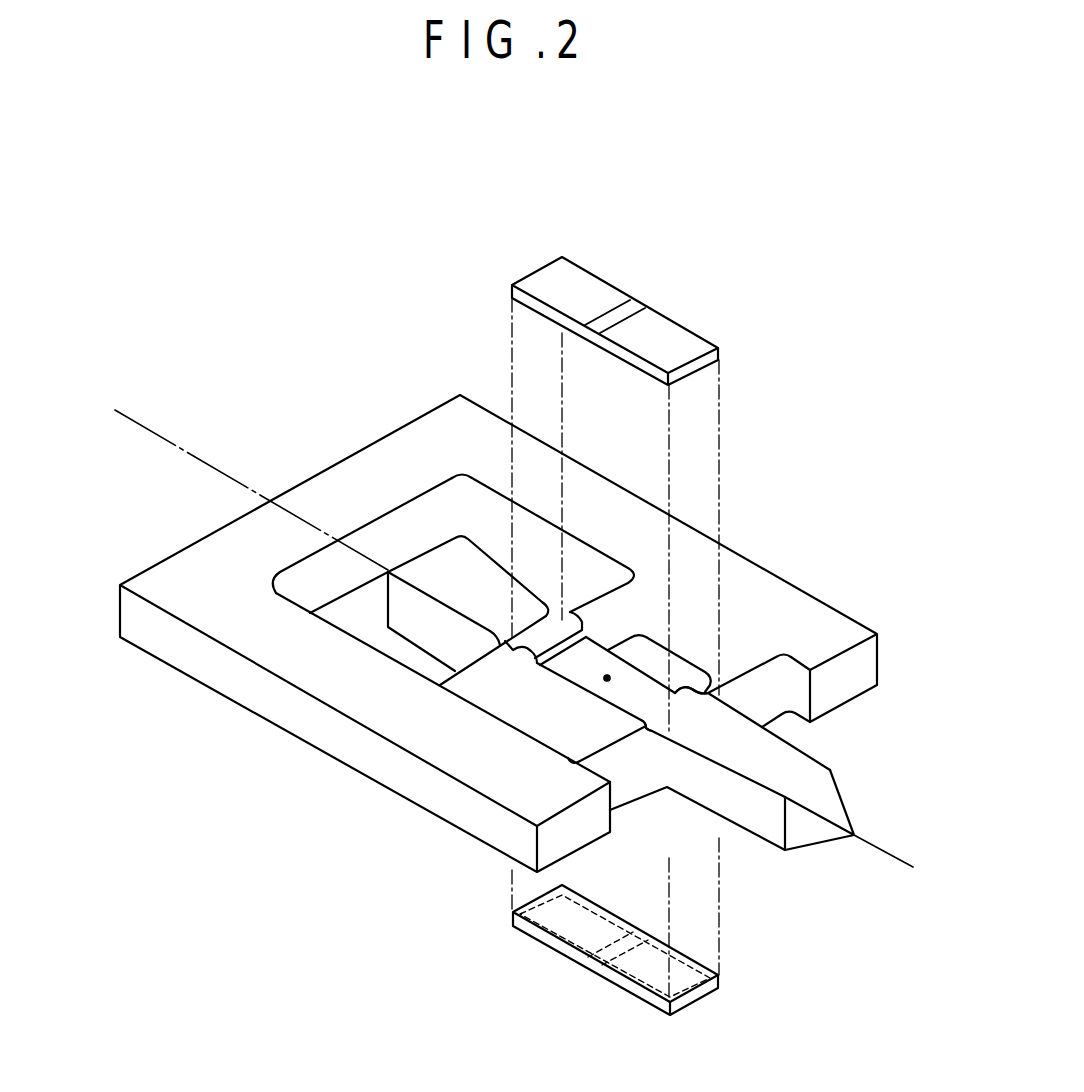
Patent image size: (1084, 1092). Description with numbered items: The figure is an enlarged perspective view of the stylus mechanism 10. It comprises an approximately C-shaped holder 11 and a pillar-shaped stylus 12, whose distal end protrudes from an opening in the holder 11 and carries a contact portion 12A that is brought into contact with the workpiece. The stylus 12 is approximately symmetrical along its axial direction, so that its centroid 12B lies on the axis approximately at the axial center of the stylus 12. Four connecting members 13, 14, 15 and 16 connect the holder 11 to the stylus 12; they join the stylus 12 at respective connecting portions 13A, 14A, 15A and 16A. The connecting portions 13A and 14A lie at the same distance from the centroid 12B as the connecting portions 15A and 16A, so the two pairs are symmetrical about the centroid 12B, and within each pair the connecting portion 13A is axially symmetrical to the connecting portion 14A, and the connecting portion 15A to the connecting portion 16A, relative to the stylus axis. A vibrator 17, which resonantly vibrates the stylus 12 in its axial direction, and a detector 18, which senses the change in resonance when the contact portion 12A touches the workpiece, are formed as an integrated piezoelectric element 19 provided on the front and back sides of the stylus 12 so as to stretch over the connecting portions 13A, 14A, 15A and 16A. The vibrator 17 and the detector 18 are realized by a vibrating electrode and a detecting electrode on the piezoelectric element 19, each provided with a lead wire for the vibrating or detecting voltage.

The stylus mechanism 10 is at (398, 373).
The holder 11 is at (163, 583).
The stylus 12 is at (802, 763).
The contact portion 12A is at (848, 798).
The centroid 12B is at (605, 680).
The connecting member 13 is at (487, 686).
The connecting portion 13A is at (433, 645).
The connecting member 14 is at (622, 617).
The connecting portion 14A is at (575, 612).
The connecting member 15 is at (627, 777).
The connecting portion 15A is at (658, 722).
The connecting member 16 is at (770, 703).
The connecting portion 16A is at (712, 690).
The vibrator 17 is at (685, 338).
The detector 18 is at (585, 285).
The piezoelectric element 19 is at (618, 297).